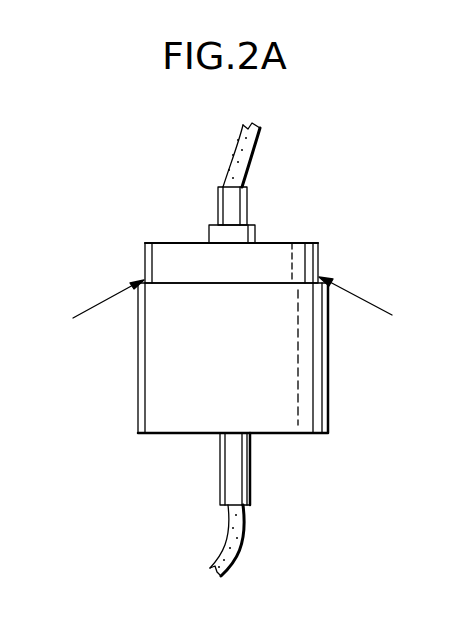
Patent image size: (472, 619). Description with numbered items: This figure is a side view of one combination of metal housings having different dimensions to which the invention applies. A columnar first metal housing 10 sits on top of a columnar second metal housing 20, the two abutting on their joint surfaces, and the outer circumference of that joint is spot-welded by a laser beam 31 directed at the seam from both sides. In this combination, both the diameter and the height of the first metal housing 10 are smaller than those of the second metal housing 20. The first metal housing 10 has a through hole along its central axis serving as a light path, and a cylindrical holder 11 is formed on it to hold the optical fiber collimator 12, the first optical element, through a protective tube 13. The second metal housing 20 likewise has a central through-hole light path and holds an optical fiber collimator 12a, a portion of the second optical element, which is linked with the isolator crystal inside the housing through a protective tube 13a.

The first metal housing 10 is at (307, 252).
The cylindrical holder 11 is at (252, 235).
The optical fiber collimator 12 is at (241, 133).
The optical fiber collimator 12a is at (227, 533).
The protective tube 13 is at (242, 198).
The protective tube 13a is at (245, 478).
The second metal housing 20 is at (310, 418).
The laser beam 31 is at (100, 302).